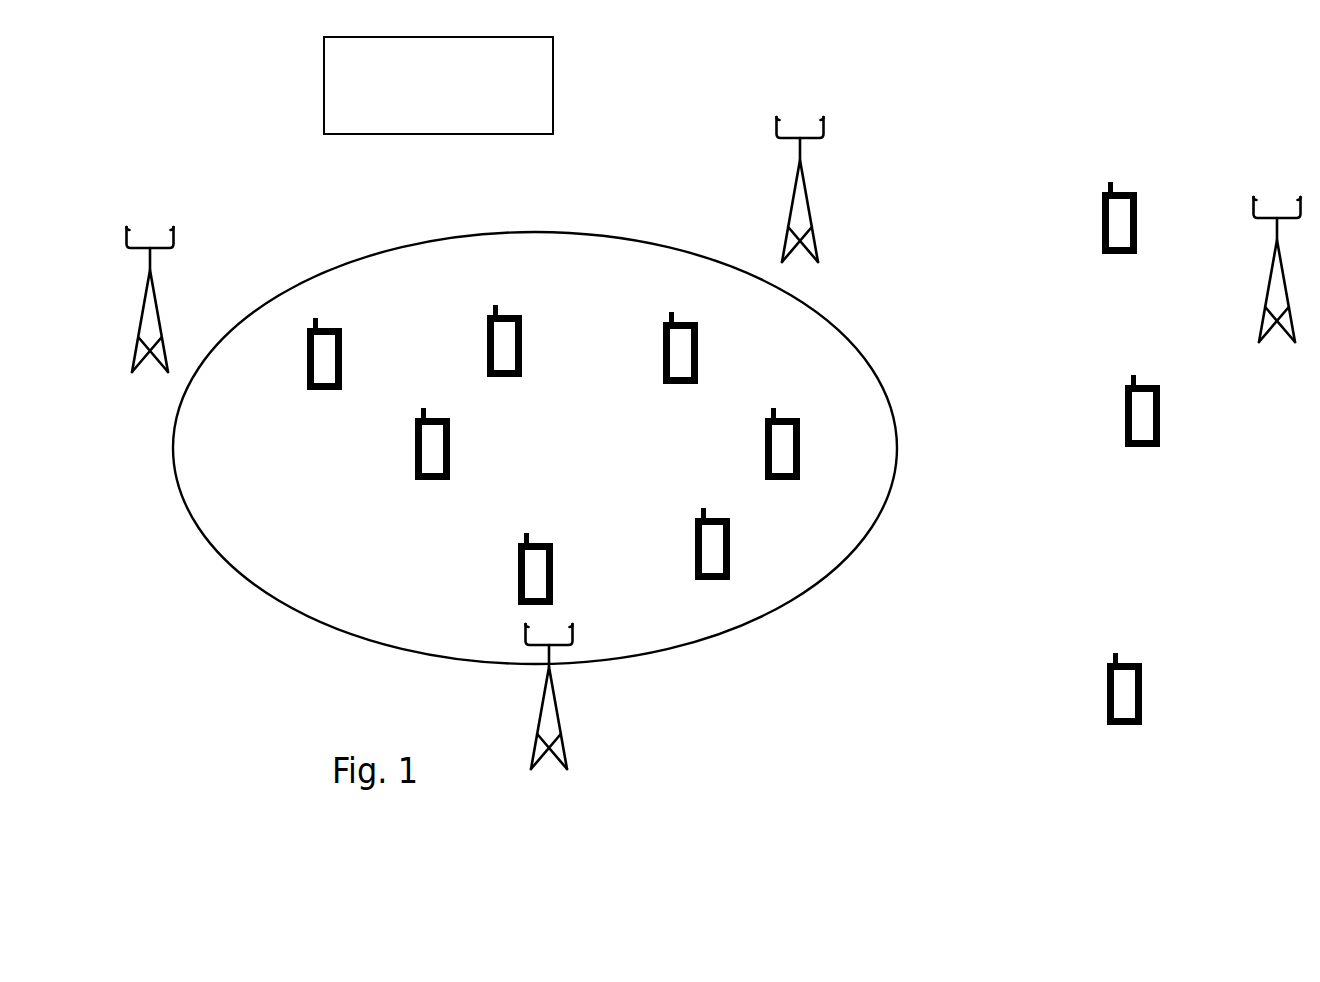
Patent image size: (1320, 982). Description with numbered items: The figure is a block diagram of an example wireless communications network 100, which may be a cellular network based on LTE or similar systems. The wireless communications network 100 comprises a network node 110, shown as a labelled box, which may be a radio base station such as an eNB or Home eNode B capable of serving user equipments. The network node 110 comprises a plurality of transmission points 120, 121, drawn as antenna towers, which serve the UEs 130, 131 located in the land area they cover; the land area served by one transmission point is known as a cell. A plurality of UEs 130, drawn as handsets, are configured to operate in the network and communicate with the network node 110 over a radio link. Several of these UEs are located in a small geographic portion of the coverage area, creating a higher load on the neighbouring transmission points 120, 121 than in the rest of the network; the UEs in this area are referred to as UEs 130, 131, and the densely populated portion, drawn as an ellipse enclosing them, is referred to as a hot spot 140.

The wireless communications network 100 is at (1153, 125).
The network node 110 is at (438, 85).
The transmission point 120 is at (714, 443).
The transmission point 121 is at (157, 305).
The UE 130 is at (764, 475).
The UE 131 is at (415, 445).
The hot spot 140 is at (885, 510).